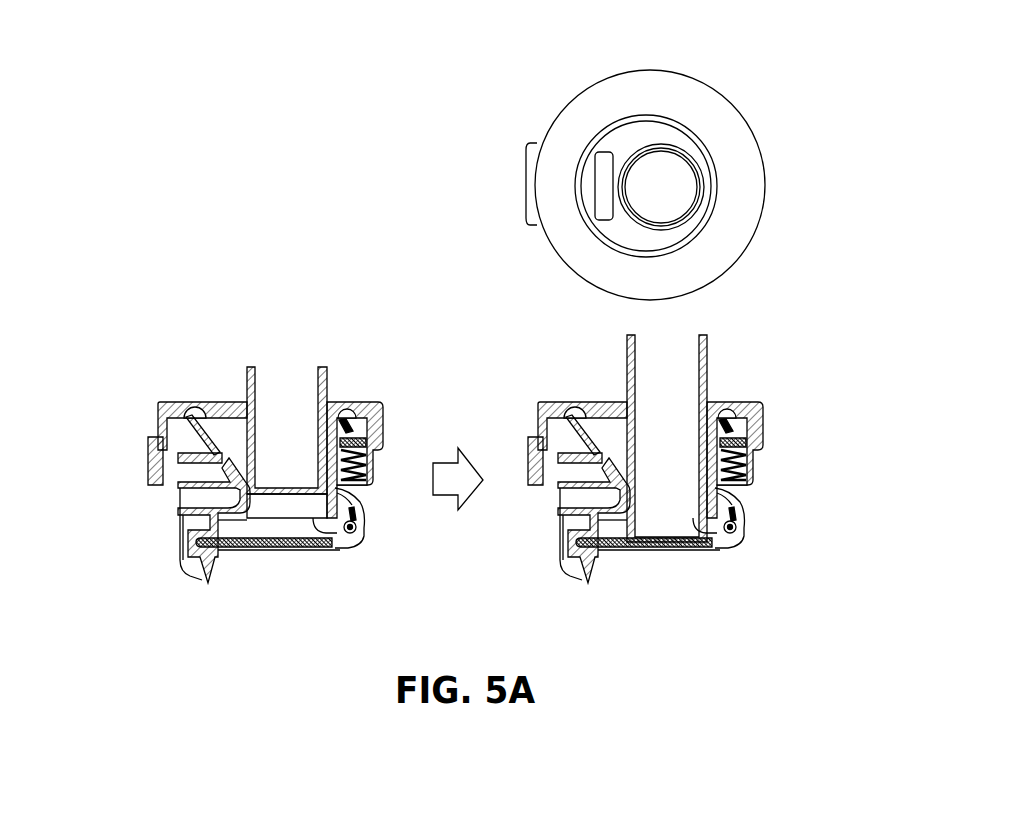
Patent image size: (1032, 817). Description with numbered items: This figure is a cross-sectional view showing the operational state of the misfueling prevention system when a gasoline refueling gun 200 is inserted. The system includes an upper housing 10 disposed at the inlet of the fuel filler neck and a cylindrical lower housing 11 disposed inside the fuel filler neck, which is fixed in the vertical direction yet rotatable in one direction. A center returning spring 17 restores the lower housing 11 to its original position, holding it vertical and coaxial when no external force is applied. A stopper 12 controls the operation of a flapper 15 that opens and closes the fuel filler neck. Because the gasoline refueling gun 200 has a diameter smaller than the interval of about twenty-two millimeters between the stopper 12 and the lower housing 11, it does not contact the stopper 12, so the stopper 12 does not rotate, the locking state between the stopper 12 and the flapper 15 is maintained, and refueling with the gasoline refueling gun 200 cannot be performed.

The upper housing 10 is at (745, 205).
The lower housing 11 is at (232, 425).
The stopper 12 is at (188, 498).
The flapper 15 is at (257, 550).
The center returning spring 17 is at (380, 457).
The gasoline refueling gun 200 is at (710, 153).